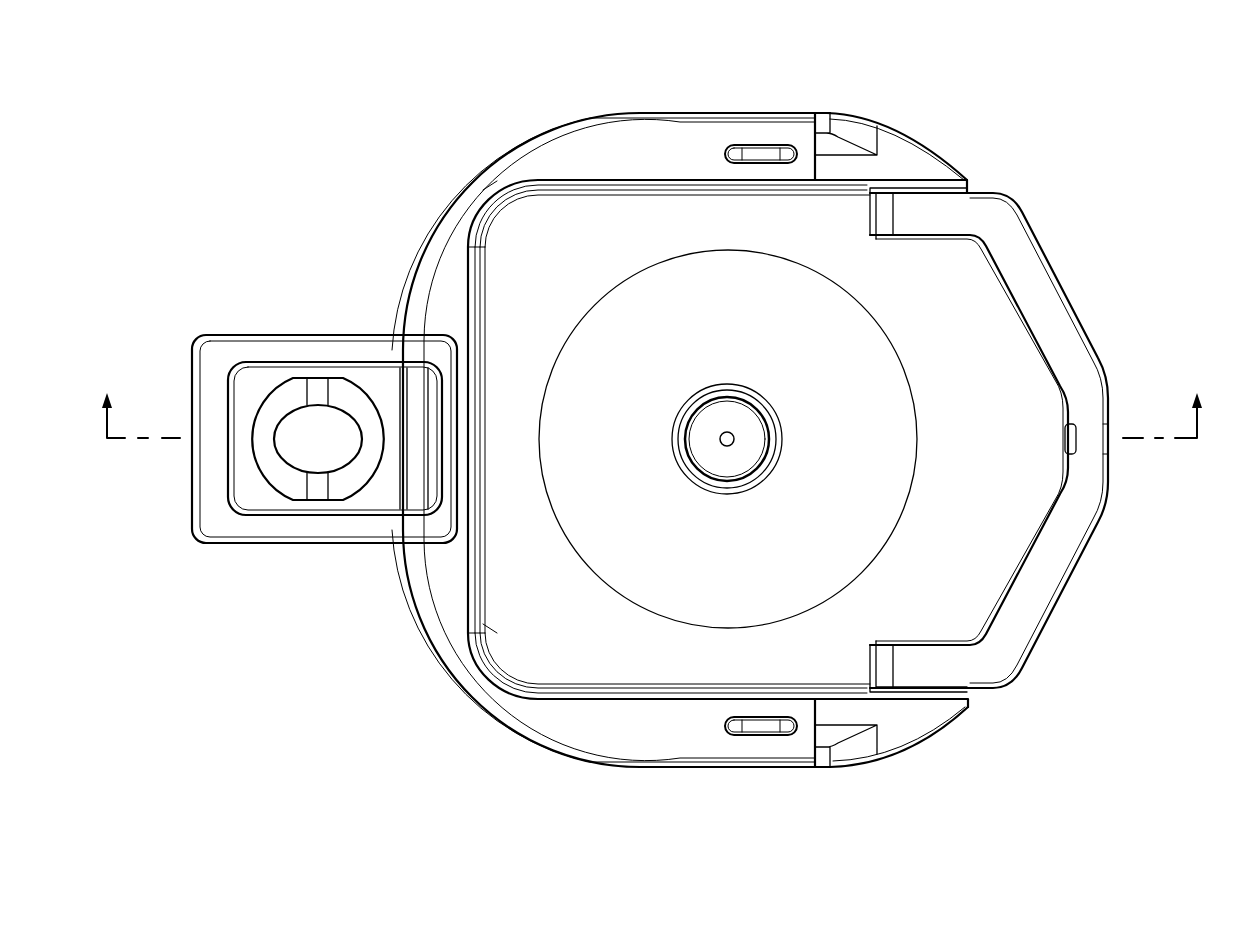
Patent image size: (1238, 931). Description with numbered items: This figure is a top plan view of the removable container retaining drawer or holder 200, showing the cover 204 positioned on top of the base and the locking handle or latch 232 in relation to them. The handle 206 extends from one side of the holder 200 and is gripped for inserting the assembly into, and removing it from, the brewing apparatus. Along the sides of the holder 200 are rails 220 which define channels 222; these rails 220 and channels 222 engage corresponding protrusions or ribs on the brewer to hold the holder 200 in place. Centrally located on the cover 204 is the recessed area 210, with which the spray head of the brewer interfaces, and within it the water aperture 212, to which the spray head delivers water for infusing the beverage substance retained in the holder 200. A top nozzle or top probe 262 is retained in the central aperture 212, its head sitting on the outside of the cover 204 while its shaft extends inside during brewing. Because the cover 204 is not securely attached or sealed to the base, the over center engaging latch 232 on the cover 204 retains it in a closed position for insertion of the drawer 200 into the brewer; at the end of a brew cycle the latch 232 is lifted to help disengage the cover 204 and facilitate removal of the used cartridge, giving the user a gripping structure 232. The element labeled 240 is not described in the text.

The holder 200 is at (238, 150).
The cover 204 is at (550, 253).
The handle 206 is at (197, 352).
The recessed area 210 is at (700, 298).
The water aperture 212 is at (783, 438).
The rails 220 is at (703, 155).
The channels 222 is at (828, 170).
The latch 232 is at (1050, 557).
The hub bore 240 is at (738, 462).
The top probe 262 is at (732, 412).